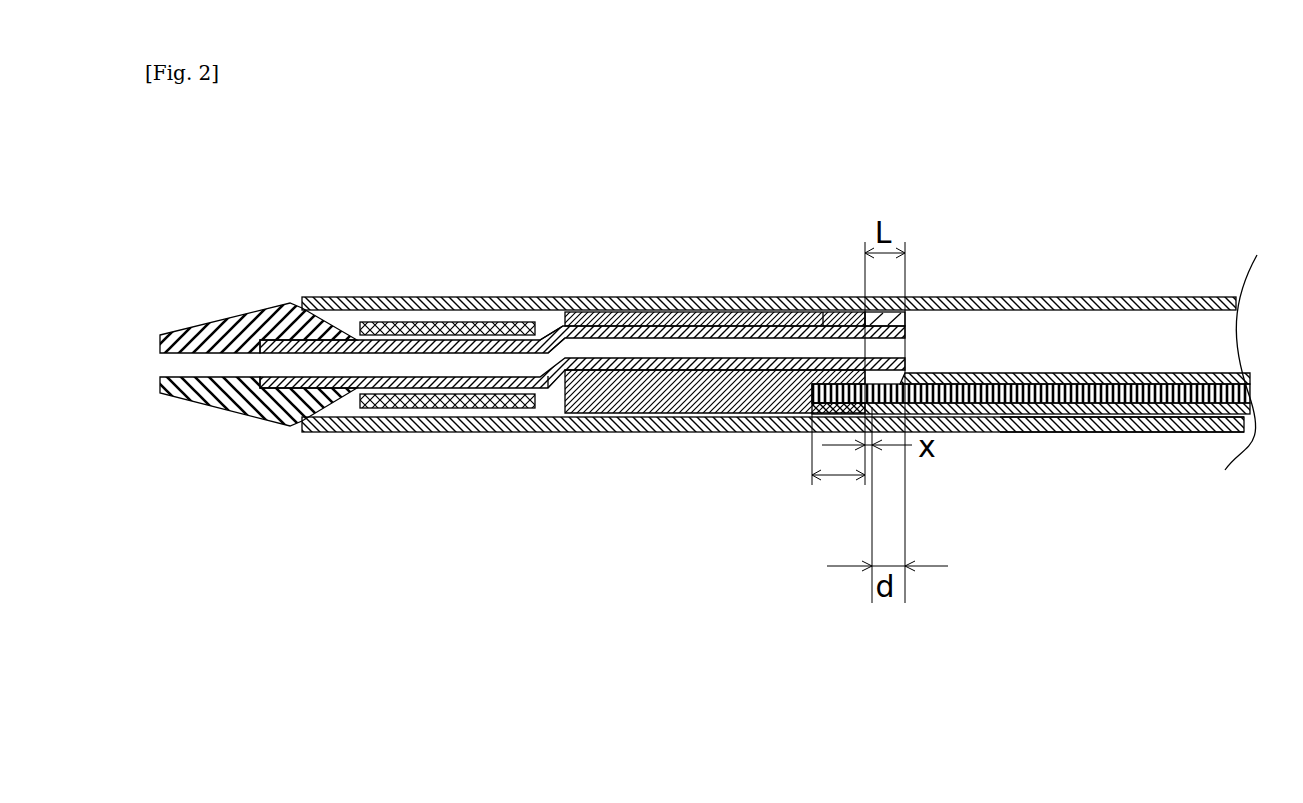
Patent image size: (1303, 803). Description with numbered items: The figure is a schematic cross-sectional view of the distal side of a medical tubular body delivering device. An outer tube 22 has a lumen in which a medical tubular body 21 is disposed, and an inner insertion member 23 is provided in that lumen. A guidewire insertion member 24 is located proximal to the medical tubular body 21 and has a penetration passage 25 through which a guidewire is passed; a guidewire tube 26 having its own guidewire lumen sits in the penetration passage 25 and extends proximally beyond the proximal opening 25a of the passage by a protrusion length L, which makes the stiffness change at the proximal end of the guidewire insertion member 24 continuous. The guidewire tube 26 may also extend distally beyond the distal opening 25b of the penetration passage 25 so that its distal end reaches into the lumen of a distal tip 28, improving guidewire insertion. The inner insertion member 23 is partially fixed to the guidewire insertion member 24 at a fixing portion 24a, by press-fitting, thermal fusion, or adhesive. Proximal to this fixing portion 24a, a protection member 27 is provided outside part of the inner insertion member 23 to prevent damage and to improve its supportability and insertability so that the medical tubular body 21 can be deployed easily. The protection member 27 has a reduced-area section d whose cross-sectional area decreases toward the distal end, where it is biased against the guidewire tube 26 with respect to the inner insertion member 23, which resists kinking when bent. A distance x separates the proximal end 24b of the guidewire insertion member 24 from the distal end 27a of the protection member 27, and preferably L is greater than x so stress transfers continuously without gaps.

The medical tubular body 21 is at (443, 321).
The outer tube 22 is at (370, 297).
The inner insertion member 23 is at (1188, 418).
The guidewire insertion member 24 is at (716, 312).
The fixing portion 24a is at (838, 479).
The proximal end of the guidewire insertion member 24b is at (863, 490).
The penetration passage 25 is at (781, 326).
The proximal opening 25a is at (880, 328).
The distal opening 25b is at (558, 330).
The guidewire tube 26 is at (823, 312).
The protection member 27 is at (1118, 385).
The distal end of the protection member 27a is at (872, 606).
The distal tip 28 is at (217, 395).